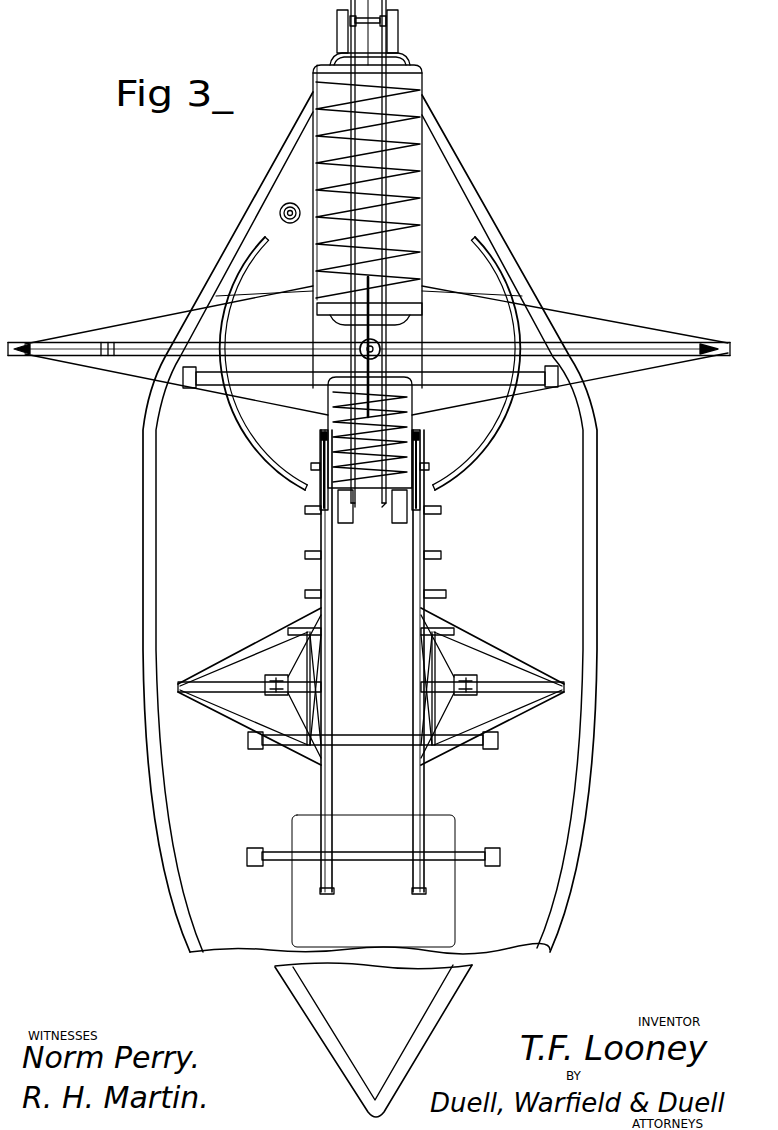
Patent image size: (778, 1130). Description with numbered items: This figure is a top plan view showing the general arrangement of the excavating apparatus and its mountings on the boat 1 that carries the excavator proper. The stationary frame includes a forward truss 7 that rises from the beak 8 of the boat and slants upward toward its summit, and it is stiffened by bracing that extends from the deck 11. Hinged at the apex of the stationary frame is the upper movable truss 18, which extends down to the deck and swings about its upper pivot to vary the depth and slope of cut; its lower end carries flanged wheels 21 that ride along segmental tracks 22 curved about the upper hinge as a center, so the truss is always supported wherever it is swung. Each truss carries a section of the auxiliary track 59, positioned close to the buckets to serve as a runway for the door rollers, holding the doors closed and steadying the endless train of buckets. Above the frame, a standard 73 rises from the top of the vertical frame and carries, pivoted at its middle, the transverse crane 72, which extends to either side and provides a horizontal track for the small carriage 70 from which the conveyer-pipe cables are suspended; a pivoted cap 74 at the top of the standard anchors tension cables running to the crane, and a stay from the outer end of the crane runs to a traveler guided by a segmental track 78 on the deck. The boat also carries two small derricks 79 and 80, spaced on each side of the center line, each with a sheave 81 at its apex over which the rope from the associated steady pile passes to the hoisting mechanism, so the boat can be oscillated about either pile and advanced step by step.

The boat 1 is at (595, 808).
The forward truss 7 is at (432, 182).
The beak 8 is at (413, 58).
The deck 11 is at (374, 697).
The upper movable truss 18 is at (412, 406).
The flanged wheels 21 is at (317, 466).
The segmental tracks 22 is at (332, 800).
The auxiliary track 59 is at (336, 56).
The carriage 70 is at (106, 343).
The transverse crane 72 is at (700, 345).
The standard 73 is at (390, 340).
The pivoted cap 74 is at (360, 357).
The segmental track 78 is at (237, 442).
The derrick 79 is at (247, 690).
The derrick 80 is at (500, 682).
The sheave 81 is at (280, 695).